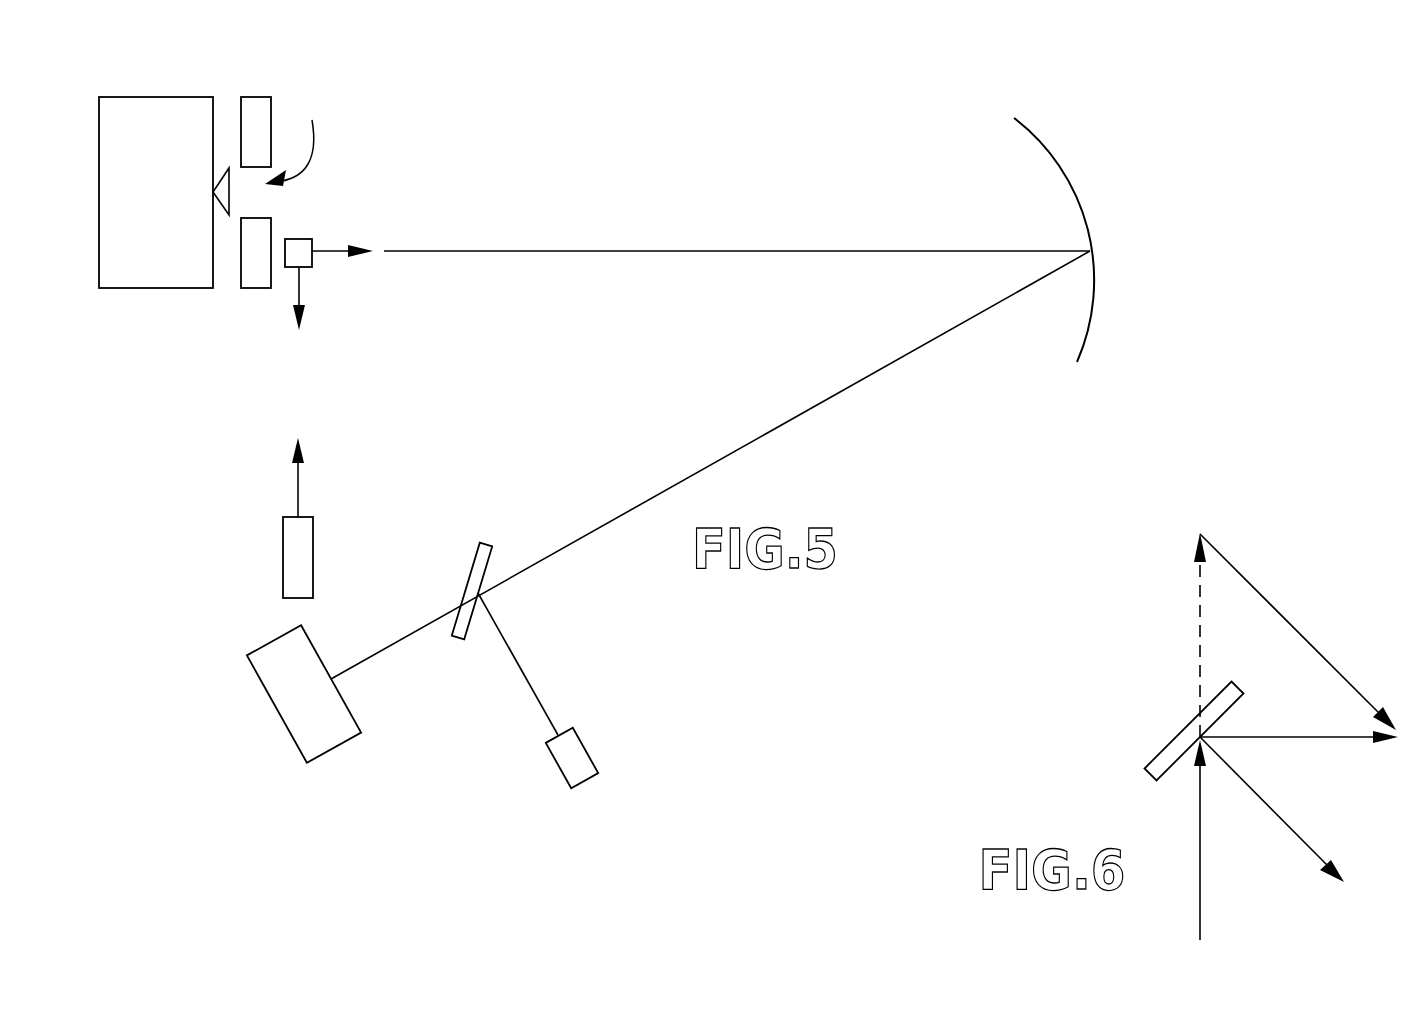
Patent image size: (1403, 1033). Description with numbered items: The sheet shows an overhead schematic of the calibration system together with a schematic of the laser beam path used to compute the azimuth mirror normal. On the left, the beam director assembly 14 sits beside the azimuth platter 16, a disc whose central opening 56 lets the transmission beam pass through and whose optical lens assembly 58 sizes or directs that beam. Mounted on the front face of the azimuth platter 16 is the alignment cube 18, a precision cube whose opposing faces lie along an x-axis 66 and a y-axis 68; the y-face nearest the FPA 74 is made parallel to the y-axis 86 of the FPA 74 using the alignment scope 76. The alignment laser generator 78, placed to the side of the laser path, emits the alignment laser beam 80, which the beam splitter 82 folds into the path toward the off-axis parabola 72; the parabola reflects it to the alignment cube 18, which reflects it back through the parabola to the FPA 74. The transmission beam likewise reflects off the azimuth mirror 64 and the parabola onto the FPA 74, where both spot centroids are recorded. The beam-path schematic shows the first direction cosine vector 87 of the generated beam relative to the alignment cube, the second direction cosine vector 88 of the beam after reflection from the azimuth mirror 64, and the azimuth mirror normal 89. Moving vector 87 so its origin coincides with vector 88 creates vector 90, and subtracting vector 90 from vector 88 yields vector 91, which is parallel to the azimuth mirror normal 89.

In FIG. 5, the beam director assembly 14 is at (172, 162).
In FIG. 5, the azimuth platter 16 is at (257, 103).
In FIG. 5, the alignment cube 18 is at (298, 239).
In FIG. 5, the central opening 56 is at (297, 139).
In FIG. 5, the optical lens assembly 58 is at (218, 203).
In FIG. 6, the azimuth mirror 64 is at (1175, 737).
In FIG. 5, the x-axis 66 is at (332, 255).
In FIG. 5, the y-axis 68 is at (303, 288).
In FIG. 5, the off-axis parabola 72 is at (1060, 170).
In FIG. 5, the FPA 74 is at (292, 703).
In FIG. 5, the alignment scope 76 is at (292, 555).
In FIG. 5, the alignment laser generator 78 is at (577, 753).
In FIG. 5, the alignment laser beam 80 is at (808, 412).
In FIG. 5, the beam splitter 82 is at (470, 568).
In FIG. 5, the y-axis of the FPA 86 is at (297, 491).
In FIG. 6, the first direction cosine vector 87 is at (1202, 867).
In FIG. 6, the second direction cosine vector 88 is at (1292, 738).
In FIG. 6, the azimuth mirror normal 89 is at (1283, 817).
In FIG. 6, the vector 90 is at (1199, 630).
In FIG. 6, the vector 91 is at (1297, 627).